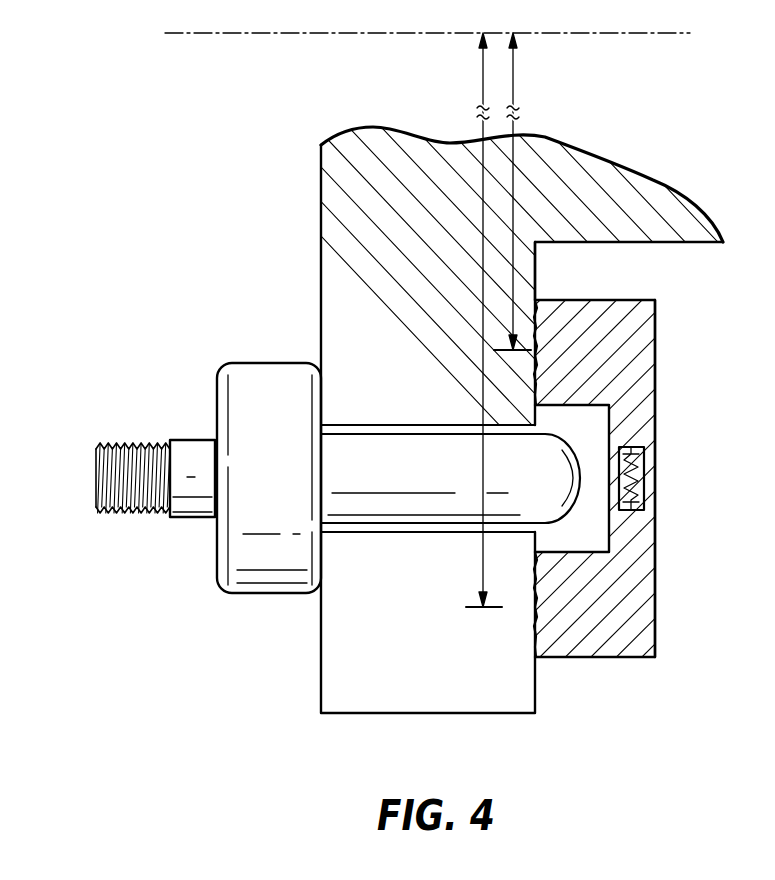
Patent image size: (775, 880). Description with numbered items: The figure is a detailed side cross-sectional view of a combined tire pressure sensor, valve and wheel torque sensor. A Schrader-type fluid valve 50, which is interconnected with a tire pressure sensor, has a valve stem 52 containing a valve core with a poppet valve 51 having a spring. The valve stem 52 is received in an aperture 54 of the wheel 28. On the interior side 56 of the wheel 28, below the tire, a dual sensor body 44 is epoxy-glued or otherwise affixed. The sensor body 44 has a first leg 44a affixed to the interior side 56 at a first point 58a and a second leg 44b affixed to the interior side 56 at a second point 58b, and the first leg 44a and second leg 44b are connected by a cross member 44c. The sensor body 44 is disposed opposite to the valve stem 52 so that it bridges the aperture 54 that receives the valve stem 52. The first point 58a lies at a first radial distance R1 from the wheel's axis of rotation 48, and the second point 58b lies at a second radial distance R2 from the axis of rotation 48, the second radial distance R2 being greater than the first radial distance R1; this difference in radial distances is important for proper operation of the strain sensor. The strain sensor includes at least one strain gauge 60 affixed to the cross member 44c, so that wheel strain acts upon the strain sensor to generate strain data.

The wheel 28 is at (372, 716).
The dual sensor body 44 is at (479, 496).
The first leg 44a is at (585, 307).
The second leg 44b is at (600, 650).
The cross member 44c is at (657, 417).
The axis of rotation 48 is at (225, 36).
The Schrader-type fluid valve 50 is at (187, 316).
The poppet valve 51 is at (190, 519).
The valve stem 52 is at (280, 372).
The aperture 54 is at (387, 530).
The interior side 56 is at (535, 270).
The first point 58a is at (533, 373).
The second point 58b is at (535, 618).
The strain gauge 60 is at (644, 463).
The first radial distance R1 is at (513, 84).
The second radial distance R2 is at (484, 88).